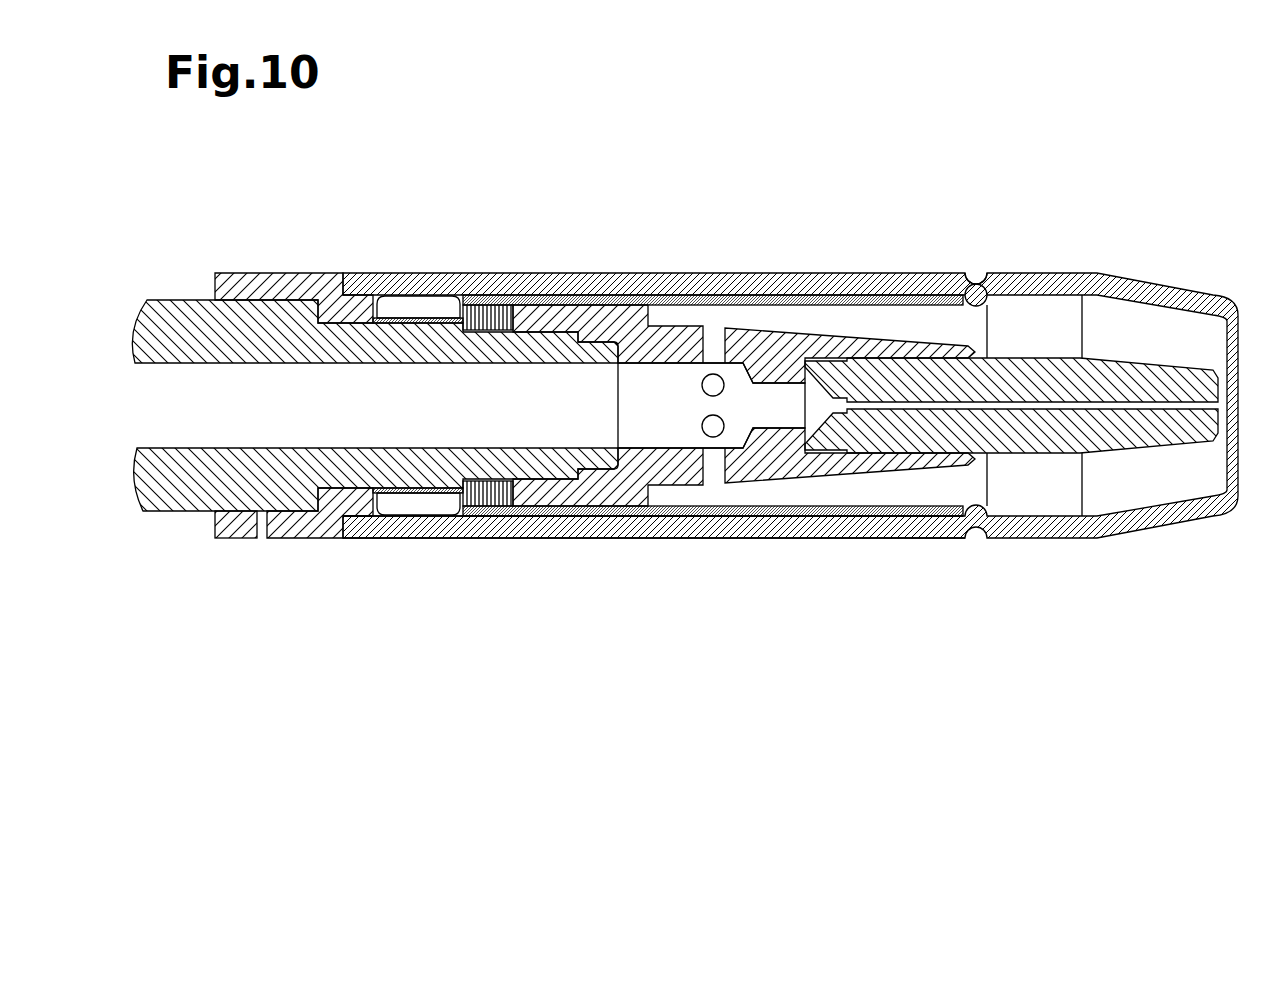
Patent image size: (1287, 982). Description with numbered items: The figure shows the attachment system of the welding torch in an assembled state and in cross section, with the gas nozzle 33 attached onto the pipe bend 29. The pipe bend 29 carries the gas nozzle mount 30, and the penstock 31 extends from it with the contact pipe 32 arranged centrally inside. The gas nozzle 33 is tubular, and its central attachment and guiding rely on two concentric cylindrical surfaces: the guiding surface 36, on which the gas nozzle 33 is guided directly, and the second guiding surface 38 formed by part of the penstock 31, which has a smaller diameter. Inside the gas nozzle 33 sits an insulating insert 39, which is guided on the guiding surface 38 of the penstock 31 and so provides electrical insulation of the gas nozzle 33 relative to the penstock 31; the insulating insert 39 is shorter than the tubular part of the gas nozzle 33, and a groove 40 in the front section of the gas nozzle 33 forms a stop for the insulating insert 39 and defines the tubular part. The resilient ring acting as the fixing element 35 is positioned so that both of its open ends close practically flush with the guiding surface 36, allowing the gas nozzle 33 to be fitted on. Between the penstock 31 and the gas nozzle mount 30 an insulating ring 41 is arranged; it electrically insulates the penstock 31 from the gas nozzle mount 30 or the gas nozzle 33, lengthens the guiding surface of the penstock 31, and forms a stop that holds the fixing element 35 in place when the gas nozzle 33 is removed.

The pipe bend 29 is at (172, 508).
The gas nozzle mount 30 is at (323, 520).
The penstock 31 is at (625, 483).
The contact pipe 32 is at (1148, 437).
The gas nozzle 33 is at (853, 532).
The fixing element 35 is at (424, 305).
The guiding surface 36 is at (355, 296).
The second guiding surface 38 is at (565, 297).
The insulating insert 39 is at (673, 277).
The groove 40 is at (981, 250).
The insulating ring 41 is at (490, 505).